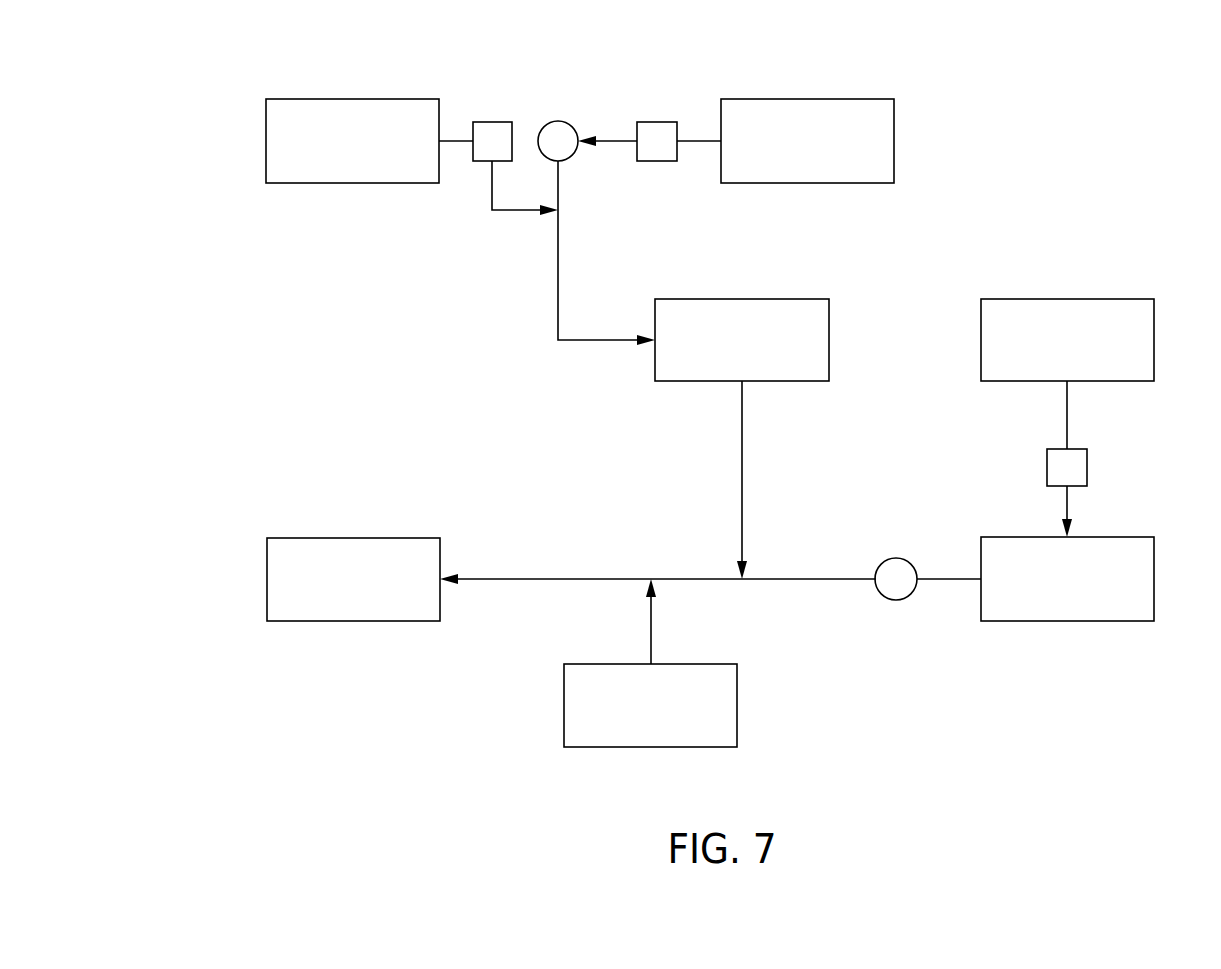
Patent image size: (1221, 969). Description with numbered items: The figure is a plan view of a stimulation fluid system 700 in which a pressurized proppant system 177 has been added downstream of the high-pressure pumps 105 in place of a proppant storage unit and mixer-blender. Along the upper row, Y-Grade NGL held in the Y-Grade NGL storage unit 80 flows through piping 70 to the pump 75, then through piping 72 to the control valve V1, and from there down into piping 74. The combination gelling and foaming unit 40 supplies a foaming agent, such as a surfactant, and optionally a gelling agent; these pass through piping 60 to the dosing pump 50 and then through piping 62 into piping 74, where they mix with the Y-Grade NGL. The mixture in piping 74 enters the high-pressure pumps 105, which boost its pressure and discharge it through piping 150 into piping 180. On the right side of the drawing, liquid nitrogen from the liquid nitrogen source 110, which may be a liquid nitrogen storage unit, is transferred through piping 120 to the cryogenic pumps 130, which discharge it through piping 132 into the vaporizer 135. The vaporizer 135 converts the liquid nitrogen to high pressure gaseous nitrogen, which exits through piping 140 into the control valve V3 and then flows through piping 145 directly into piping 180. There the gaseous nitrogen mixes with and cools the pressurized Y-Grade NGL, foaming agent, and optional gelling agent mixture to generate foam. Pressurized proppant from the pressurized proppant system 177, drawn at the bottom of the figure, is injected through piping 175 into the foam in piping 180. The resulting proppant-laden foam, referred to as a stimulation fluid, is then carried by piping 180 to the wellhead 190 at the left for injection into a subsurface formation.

The stimulation fluid system 700 is at (160, 496).
The combination gelling and foaming unit 40 is at (383, 99).
The dosing pump 50 is at (492, 122).
The control valve V1 is at (558, 121).
The pump 75 is at (657, 122).
The Y-Grade NGL storage unit 80 is at (820, 99).
The piping 60 is at (458, 141).
The piping 62 is at (513, 210).
The piping 72 is at (616, 141).
The piping 70 is at (698, 141).
The piping 74 is at (558, 268).
The high-pressure pumps 105 is at (748, 299).
The liquid nitrogen source 110 is at (1073, 299).
The piping 120 is at (1067, 410).
The cryogenic pumps 130 is at (1087, 455).
The piping 132 is at (1067, 508).
The vaporizer 135 is at (1039, 537).
The wellhead 190 is at (337, 538).
The piping 180 is at (498, 579).
The piping 150 is at (742, 430).
The piping 145 is at (824, 579).
The control valve V3 is at (896, 558).
The piping 140 is at (944, 579).
The piping 175 is at (651, 622).
The pressurized proppant system 177 is at (627, 664).